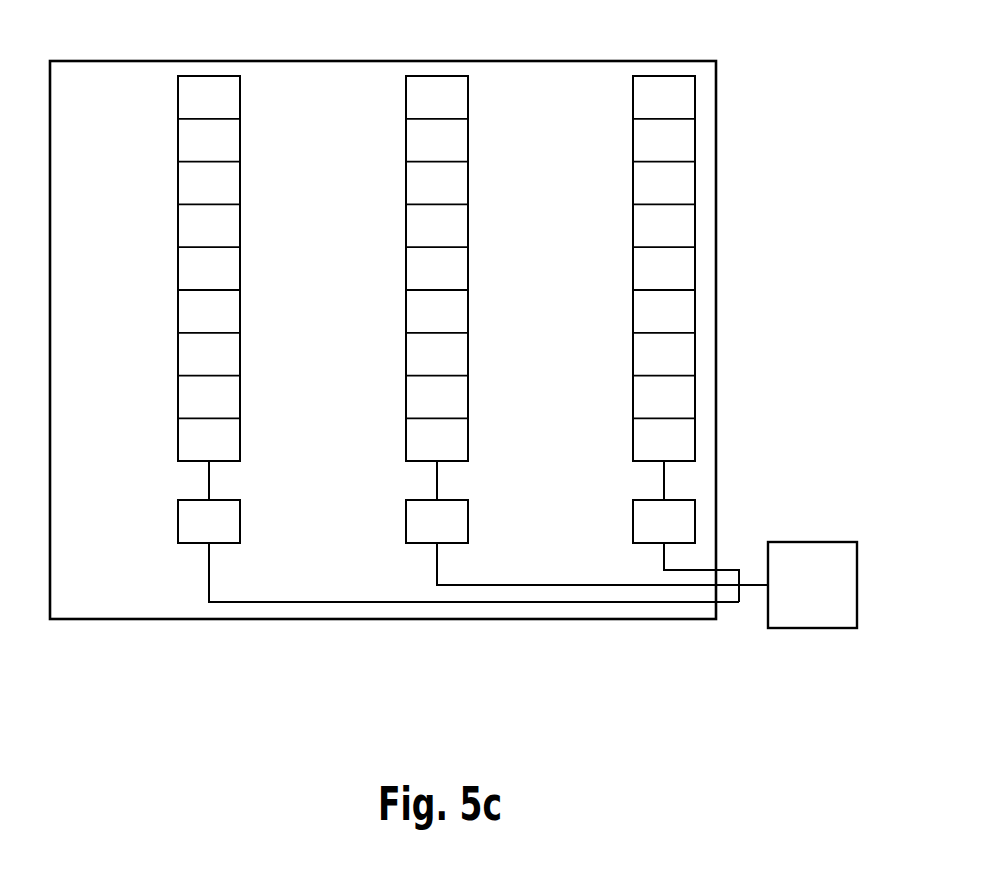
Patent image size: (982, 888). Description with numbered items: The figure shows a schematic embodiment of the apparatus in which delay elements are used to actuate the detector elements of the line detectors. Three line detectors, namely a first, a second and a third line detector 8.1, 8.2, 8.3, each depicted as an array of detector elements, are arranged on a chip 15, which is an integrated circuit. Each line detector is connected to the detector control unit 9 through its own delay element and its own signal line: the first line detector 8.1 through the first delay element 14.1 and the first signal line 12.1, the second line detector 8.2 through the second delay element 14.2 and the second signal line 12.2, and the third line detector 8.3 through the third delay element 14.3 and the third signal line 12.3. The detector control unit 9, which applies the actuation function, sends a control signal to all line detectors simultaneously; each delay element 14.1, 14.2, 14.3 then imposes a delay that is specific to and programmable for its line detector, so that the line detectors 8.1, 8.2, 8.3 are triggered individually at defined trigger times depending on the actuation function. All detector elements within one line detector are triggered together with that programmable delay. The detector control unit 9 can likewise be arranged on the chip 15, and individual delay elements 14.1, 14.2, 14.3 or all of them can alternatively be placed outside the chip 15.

The first line detector 8.1 is at (200, 90).
The second line detector 8.2 is at (428, 90).
The third line detector 8.3 is at (657, 90).
The first delay element 14.1 is at (193, 534).
The second delay element 14.2 is at (418, 534).
The third delay element 14.3 is at (688, 520).
The first signal line 12.1 is at (585, 603).
The second signal line 12.2 is at (640, 588).
The third signal line 12.3 is at (732, 573).
The chip 15 is at (708, 252).
The detector control unit 9 is at (825, 612).